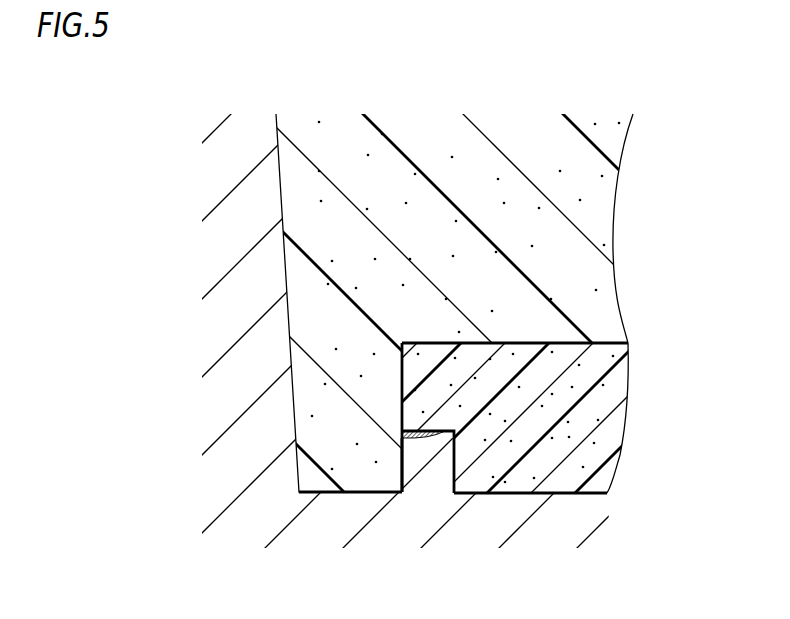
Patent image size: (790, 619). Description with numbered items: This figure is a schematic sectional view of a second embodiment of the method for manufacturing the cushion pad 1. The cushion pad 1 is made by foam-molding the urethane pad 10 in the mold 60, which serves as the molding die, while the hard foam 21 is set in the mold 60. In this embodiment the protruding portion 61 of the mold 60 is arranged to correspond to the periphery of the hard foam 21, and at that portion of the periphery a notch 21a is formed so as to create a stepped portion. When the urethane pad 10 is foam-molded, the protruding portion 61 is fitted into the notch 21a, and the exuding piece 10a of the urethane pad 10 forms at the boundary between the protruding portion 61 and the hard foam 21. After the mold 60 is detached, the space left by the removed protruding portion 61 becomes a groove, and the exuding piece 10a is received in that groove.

The cushion pad 1 is at (554, 86).
The urethane pad 10 is at (585, 194).
The exuding piece 10a is at (418, 439).
The hard foam 21 is at (611, 403).
The notch 21a is at (448, 471).
The mold 60 is at (363, 517).
The protruding portion 61 is at (412, 460).